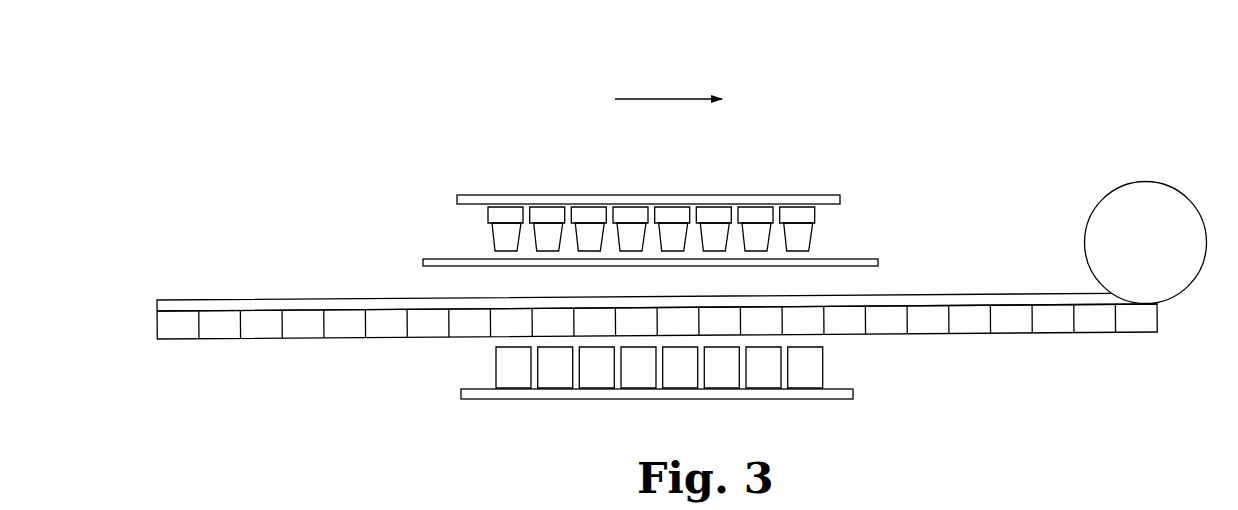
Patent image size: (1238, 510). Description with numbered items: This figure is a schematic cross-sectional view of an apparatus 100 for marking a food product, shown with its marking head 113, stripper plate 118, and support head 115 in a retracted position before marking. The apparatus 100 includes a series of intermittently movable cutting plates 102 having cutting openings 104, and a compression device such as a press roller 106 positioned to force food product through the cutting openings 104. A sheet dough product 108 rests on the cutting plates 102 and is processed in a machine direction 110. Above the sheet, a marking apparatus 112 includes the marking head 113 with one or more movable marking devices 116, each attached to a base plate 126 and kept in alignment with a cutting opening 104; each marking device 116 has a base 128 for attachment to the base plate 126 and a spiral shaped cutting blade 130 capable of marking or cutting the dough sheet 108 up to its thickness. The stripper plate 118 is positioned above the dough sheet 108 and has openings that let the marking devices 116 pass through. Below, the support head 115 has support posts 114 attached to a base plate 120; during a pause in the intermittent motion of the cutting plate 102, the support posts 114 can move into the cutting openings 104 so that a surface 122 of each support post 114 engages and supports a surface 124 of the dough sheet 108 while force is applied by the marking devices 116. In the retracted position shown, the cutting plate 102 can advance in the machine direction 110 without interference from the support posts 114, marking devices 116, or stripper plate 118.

The apparatus 100 is at (415, 95).
The cutting plate 102 is at (627, 311).
The cutting opening 104 is at (382, 329).
The press roller 106 is at (1155, 181).
The sheet dough product 108 is at (243, 300).
The machine direction 110 is at (668, 85).
The marking apparatus 112 is at (812, 107).
The marking head 113 is at (540, 193).
The support post 114 is at (590, 364).
The support head 115 is at (664, 394).
The marking device 116 is at (658, 194).
The stripper plate 118 is at (878, 262).
The base plate 120 is at (850, 390).
The surface of support post 122 is at (508, 347).
The surface of sheet of dough product 124 is at (175, 315).
The base plate 126 is at (838, 197).
The base 128 is at (814, 213).
The cutting blade 130 is at (811, 238).